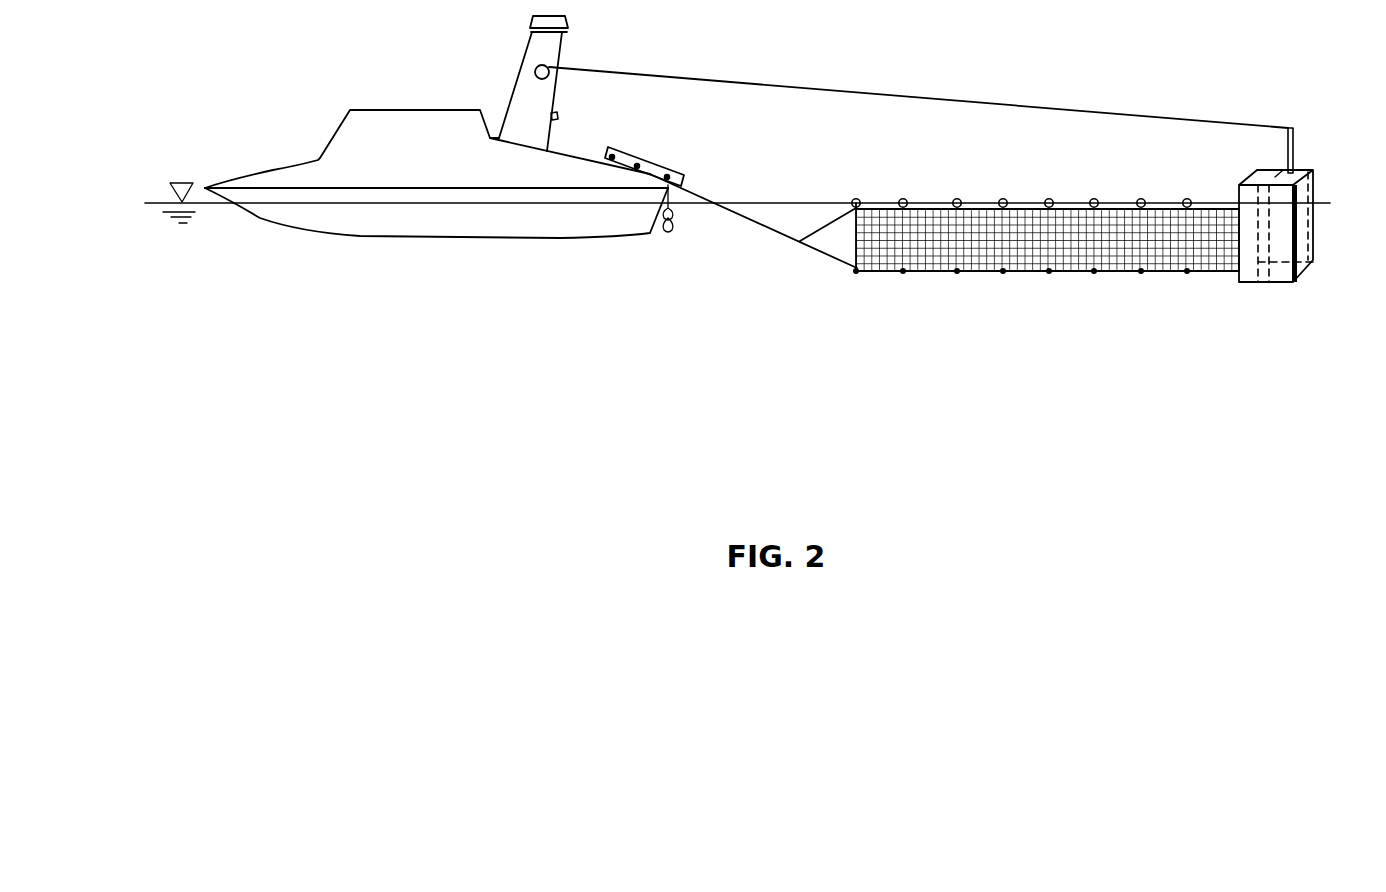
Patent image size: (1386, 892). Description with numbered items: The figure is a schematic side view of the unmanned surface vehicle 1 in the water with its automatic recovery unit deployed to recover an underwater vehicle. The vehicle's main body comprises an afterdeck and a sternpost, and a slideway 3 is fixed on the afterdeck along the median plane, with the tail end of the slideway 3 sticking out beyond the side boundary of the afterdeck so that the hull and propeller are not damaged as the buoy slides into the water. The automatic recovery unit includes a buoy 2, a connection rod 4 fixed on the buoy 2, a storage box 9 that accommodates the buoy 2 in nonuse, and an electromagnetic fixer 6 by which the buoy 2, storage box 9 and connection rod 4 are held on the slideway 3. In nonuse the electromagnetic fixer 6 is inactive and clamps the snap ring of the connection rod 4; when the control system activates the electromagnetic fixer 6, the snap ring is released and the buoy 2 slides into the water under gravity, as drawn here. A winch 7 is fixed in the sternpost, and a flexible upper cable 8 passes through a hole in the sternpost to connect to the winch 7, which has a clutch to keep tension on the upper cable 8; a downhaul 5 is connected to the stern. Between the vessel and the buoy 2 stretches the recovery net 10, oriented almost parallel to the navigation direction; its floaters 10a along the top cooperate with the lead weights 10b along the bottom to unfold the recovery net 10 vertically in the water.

The unmanned surface vehicle 1 is at (376, 152).
The buoy 2 is at (1300, 230).
The slideway 3 is at (628, 155).
The connection rod 4 is at (1293, 153).
The downhaul 5 is at (750, 218).
The electromagnetic fixer 6 is at (552, 115).
The winch 7 is at (537, 67).
The upper cable 8 is at (828, 90).
The storage box 9 is at (1255, 240).
The recovery net 10 is at (875, 255).
The floaters 10a is at (958, 202).
The lead weights 10b is at (955, 272).